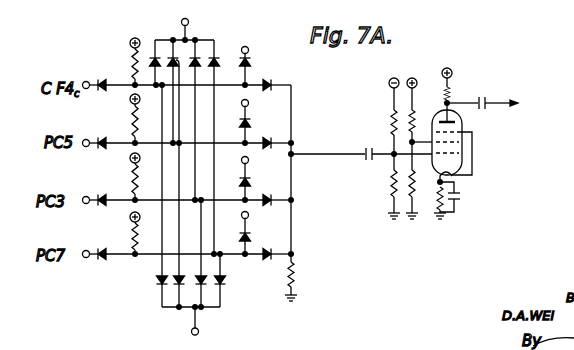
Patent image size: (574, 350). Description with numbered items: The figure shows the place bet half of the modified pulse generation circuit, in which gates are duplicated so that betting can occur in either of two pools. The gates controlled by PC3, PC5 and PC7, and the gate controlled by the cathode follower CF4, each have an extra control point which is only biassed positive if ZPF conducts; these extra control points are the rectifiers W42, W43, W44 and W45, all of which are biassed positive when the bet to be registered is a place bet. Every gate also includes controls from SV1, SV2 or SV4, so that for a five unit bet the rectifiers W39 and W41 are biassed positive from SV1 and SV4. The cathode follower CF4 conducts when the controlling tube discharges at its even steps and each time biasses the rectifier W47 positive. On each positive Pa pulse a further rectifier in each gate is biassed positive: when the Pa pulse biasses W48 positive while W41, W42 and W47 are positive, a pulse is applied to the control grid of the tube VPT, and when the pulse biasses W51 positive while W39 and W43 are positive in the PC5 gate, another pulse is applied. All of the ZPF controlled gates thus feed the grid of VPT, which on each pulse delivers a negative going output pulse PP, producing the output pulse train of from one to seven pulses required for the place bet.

The rectifier W47 is at (109, 75).
The rectifier W48 is at (154, 57).
The rectifier W51 is at (182, 91).
The rectifier W41 is at (269, 71).
The rectifier W39 is at (262, 125).
The rectifier W42 is at (156, 281).
The rectifier W43 is at (179, 286).
The rectifier W44 is at (205, 286).
The rectifier W45 is at (226, 281).
The tube SV4 is at (250, 48).
The tube SV1 is at (257, 103).
The tube SV2 is at (261, 189).
The cathode follower CF4 is at (86, 85).
The controlling tube step PC5 is at (86, 143).
The controlling tube step PC3 is at (86, 200).
The controlling tube step PC7 is at (86, 254).
The pulse Pa is at (201, 28).
The place pool control tube ZPF is at (203, 328).
The tube VPT is at (471, 143).
The output pulse train PP is at (500, 103).